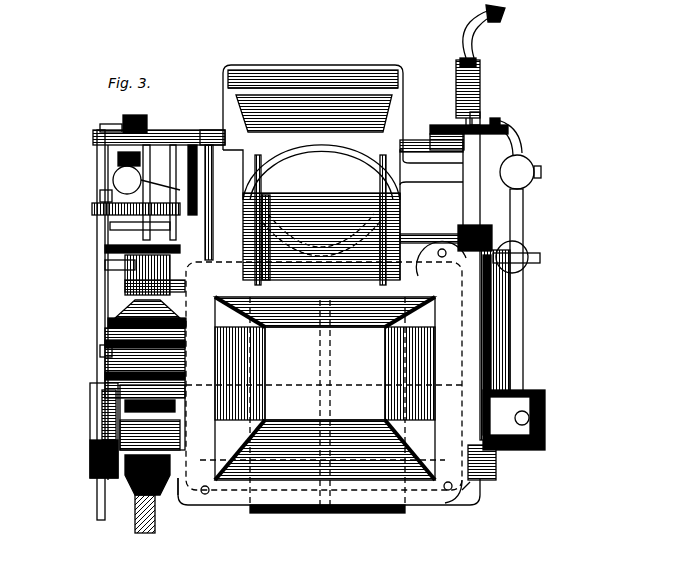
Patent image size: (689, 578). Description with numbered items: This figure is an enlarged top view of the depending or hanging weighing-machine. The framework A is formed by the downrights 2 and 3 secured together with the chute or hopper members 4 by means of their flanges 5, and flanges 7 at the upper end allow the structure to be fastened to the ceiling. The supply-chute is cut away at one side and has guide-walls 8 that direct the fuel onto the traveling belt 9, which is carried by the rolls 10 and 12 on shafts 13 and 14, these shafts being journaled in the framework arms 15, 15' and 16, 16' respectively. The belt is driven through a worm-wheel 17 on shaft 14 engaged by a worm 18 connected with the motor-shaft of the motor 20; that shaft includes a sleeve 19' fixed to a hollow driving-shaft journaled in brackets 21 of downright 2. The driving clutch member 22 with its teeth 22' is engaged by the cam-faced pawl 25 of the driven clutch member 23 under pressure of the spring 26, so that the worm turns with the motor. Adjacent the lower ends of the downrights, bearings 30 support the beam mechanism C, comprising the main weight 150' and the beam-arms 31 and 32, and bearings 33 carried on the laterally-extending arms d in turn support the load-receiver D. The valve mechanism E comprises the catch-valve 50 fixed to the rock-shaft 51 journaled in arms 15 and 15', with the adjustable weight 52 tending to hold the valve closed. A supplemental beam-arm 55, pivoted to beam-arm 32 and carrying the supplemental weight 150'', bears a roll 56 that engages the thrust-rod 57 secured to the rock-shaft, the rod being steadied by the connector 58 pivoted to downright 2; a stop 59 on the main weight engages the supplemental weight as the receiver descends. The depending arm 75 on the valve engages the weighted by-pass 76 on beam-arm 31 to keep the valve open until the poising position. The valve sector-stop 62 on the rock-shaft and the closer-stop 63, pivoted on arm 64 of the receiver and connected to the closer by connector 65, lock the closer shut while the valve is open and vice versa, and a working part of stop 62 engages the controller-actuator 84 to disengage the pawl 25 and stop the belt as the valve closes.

The downright 2 is at (175, 408).
The downright 3 is at (490, 340).
The chute or hopper member 4 is at (300, 445).
The flange 5 is at (335, 498).
The flange 7 is at (466, 505).
The guide-wall 8 is at (258, 168).
The belt 9 is at (342, 196).
The roll 10 is at (400, 212).
The roll 12 is at (405, 510).
The shaft 13 is at (430, 248).
The shaft 14 is at (496, 466).
The arm 15 is at (159, 127).
The arm 15' is at (482, 190).
The arm 16 is at (181, 499).
The arm 16' is at (486, 495).
The worm-wheel 17 is at (145, 528).
The worm 18 is at (130, 490).
The sleeve 19' is at (121, 303).
The motor 20 is at (115, 322).
The bracket or arm 21 is at (125, 285).
The driving clutch member 22 is at (119, 271).
The teeth 22' is at (125, 242).
The driven clutch member 23 is at (92, 209).
The pawl 25 is at (110, 226).
The spring 26 is at (100, 196).
The bearing 30 is at (541, 258).
The beam-arm 31 is at (523, 316).
The beam-arm 32 is at (541, 175).
The bearing 33 is at (108, 178).
The catch-valve 50 is at (323, 67).
The rock-shaft 51 is at (505, 132).
The adjustable weight 52 is at (482, 80).
The supplemental beam-arm 55 is at (97, 315).
The engaging surface or roll 56 is at (110, 130).
The thrust-rod 57 is at (147, 122).
The connector 58 is at (118, 158).
The stop 59 is at (102, 415).
The valve sector-stop 62 is at (212, 132).
The closer-stop 63 is at (200, 325).
The arm 64 is at (146, 192).
The connector 65 is at (252, 200).
The depending arm 75 is at (462, 27).
The weighted by-pass 76 is at (476, 112).
The controller-actuator 84 is at (213, 181).
The main weight 150' is at (533, 420).
The supplemental weight 150'' is at (84, 459).
The framework A is at (329, 400).
The beam mechanism C is at (539, 287).
The load-receiver D is at (313, 172).
The valve mechanism E is at (204, 113).
The laterally-extending arm d is at (339, 191).